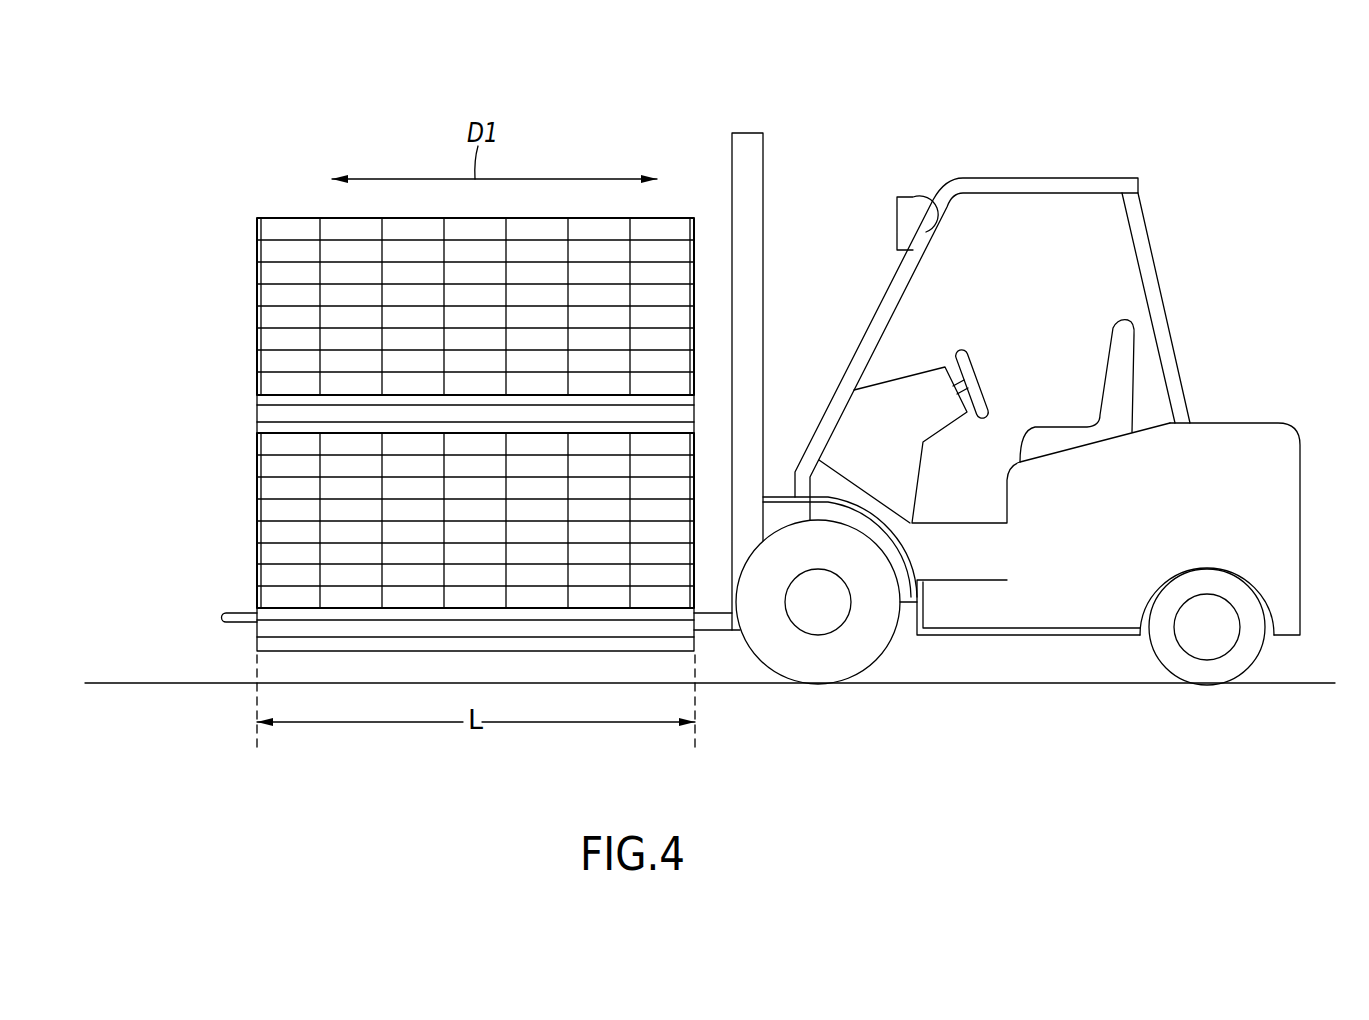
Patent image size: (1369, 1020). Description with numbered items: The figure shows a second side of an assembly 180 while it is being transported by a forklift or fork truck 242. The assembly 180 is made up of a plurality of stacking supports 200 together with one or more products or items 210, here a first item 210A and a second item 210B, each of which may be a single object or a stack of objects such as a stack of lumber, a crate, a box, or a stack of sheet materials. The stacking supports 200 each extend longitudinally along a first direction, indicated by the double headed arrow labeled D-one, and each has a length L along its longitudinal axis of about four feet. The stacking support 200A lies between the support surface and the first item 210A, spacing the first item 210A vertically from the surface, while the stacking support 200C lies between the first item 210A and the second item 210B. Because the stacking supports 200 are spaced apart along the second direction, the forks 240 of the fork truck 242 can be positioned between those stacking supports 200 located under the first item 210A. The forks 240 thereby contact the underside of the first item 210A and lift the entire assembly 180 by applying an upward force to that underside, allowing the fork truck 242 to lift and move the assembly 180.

The assembly 180 is at (238, 143).
The items 210 is at (140, 272).
The first item 210A is at (262, 510).
The second item 210B is at (292, 231).
The stacking supports 200 is at (133, 426).
The stacking support 200A is at (257, 627).
The stacking support 200C is at (257, 410).
The forks 240 is at (235, 612).
The fork truck 242 is at (1152, 262).